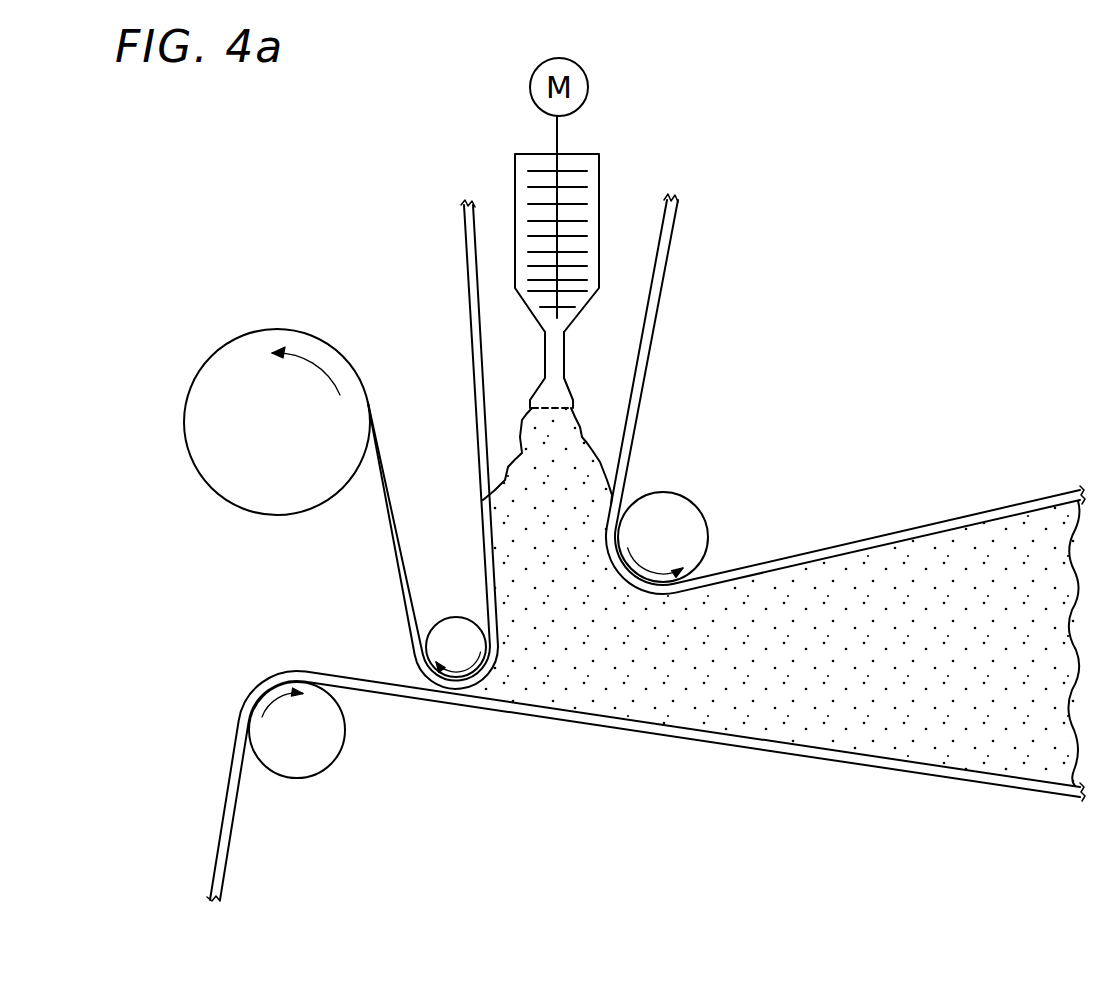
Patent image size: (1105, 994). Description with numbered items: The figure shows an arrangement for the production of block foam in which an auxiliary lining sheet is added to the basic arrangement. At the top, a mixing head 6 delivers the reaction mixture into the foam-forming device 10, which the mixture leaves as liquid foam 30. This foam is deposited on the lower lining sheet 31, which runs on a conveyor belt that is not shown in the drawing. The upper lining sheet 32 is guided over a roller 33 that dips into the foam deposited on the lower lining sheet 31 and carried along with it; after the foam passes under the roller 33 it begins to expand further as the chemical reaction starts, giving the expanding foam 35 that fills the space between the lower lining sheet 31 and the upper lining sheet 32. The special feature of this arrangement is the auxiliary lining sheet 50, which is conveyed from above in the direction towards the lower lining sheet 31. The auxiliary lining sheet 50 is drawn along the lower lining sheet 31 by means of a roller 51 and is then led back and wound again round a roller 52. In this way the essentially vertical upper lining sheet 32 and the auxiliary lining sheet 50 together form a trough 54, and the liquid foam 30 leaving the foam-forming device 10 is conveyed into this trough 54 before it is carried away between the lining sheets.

The mixing head 6 is at (599, 176).
The foam-forming device 10 is at (563, 348).
The liquid foam 30 is at (593, 682).
The lower lining sheet 31 is at (463, 702).
The upper lining sheet 32 is at (672, 248).
The roller 33 is at (680, 503).
The expanding foam 35 is at (895, 713).
The auxiliary lining sheet 50 is at (475, 385).
The roller 51 is at (450, 635).
The roller 52 is at (277, 502).
The trough 54 is at (585, 484).